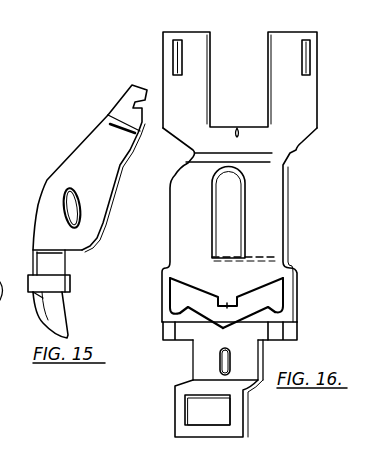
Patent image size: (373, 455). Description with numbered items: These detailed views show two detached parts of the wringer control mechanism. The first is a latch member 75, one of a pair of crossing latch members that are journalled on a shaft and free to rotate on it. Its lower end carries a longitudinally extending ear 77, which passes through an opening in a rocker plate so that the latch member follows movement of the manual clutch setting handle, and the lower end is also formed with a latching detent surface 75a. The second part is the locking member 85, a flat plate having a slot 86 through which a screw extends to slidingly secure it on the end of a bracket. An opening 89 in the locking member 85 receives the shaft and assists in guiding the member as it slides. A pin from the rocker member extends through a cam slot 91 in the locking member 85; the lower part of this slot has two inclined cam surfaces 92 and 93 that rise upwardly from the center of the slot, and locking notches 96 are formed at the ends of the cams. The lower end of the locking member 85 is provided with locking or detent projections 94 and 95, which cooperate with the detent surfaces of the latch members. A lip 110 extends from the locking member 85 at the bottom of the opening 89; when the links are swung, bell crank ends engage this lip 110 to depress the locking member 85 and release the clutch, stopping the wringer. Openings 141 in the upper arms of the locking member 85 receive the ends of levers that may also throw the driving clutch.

In FIG. 15, the latch member 75 is at (90, 150).
In FIG. 15, the latching detent surface 75a is at (68, 331).
In FIG. 15, the longitudinally extending ear 77 is at (42, 290).
In FIG. 16, the locking member 85 is at (283, 195).
In FIG. 16, the slot 86 is at (230, 361).
In FIG. 16, the opening 89 is at (237, 236).
In FIG. 16, the cam slot 91 is at (180, 303).
In FIG. 16, the inclined cam surface 92 is at (215, 317).
In FIG. 16, the inclined cam surface 93 is at (255, 315).
In FIG. 16, the locking projection 94 is at (170, 341).
In FIG. 16, the locking projection 95 is at (287, 341).
In FIG. 16, the locking notch 96 is at (163, 320).
In FIG. 16, the lip 110 is at (230, 255).
In FIG. 16, the opening 141 is at (173, 51).